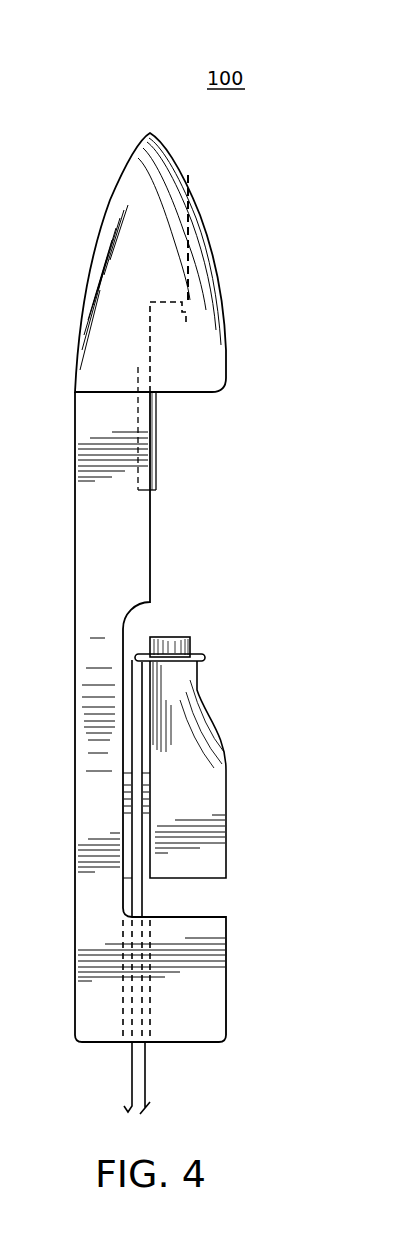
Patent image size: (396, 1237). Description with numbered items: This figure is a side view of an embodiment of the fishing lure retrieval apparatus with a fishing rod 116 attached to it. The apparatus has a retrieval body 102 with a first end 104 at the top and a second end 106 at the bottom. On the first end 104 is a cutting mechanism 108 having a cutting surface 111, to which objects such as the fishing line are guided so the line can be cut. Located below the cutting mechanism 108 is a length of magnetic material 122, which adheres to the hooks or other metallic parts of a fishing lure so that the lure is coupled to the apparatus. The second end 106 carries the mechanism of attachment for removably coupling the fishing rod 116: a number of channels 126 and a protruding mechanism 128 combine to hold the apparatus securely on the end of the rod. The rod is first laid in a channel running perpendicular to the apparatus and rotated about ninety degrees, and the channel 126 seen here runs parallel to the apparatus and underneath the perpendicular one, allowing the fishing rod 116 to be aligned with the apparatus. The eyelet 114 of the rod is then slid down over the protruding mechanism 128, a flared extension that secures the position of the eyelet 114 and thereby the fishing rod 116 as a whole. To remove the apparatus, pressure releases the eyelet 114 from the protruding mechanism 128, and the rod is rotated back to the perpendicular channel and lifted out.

The retrieval body 102 is at (90, 552).
The first end 104 is at (112, 149).
The second end 106 is at (221, 1069).
The cutting mechanism 108 is at (230, 252).
The cutting surface 111 is at (186, 325).
The eyelet 114 is at (208, 657).
The fishing rod 116 is at (131, 1075).
The length of magnetic material 122 is at (155, 452).
The channel 126 is at (137, 628).
The protruding mechanism 128 is at (181, 637).